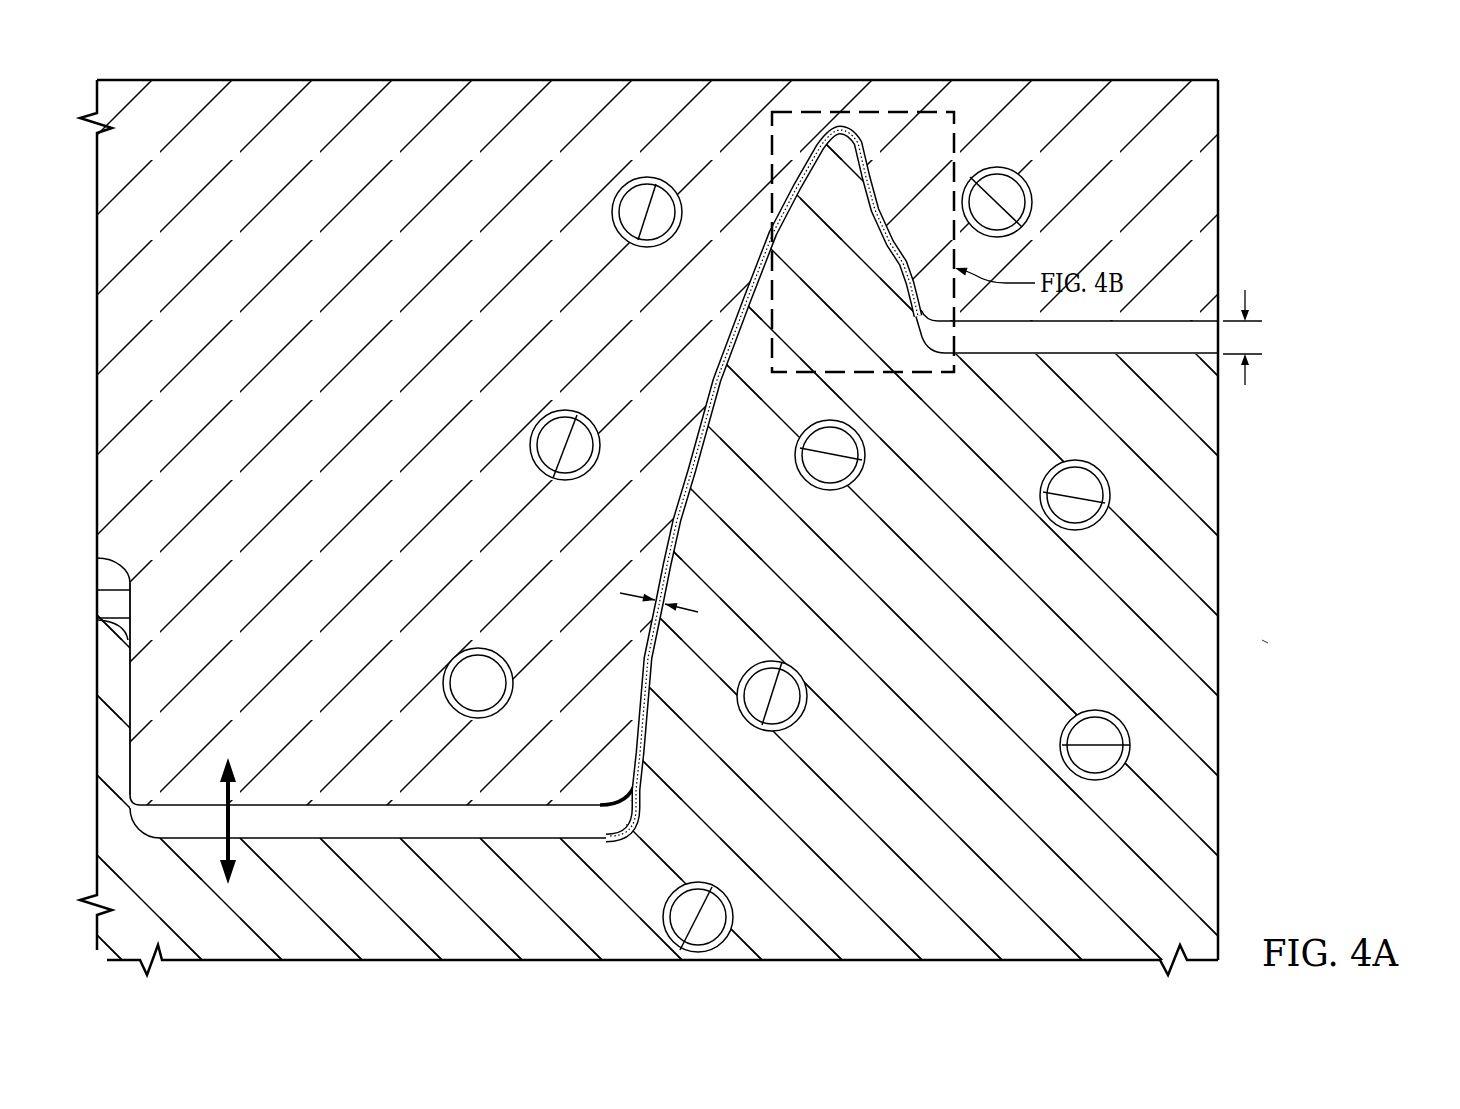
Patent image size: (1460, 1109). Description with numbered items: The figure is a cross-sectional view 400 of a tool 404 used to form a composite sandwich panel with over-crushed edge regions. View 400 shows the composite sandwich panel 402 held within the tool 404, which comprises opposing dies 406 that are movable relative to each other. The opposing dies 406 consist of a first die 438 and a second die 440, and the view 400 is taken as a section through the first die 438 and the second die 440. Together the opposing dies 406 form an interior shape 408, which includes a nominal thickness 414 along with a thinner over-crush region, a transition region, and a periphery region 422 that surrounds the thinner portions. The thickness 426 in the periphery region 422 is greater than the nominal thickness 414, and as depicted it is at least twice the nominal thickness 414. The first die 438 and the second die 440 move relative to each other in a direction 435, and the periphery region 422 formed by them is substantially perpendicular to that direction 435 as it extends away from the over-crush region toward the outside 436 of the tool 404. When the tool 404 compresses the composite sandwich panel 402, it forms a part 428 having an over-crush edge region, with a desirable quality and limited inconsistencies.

The view 400 is at (1385, 372).
The composite sandwich panel 402 is at (650, 558).
The tool 404 is at (1232, 416).
The opposing dies 406 is at (1232, 486).
The interior shape 408 is at (351, 815).
The nominal thickness 414 is at (690, 610).
The periphery region 422 is at (1108, 360).
The thickness 426 is at (1250, 302).
The part 428 is at (633, 650).
The direction 435 is at (224, 843).
The outside 436 is at (1274, 649).
The first die 438 is at (413, 407).
The second die 440 is at (965, 677).